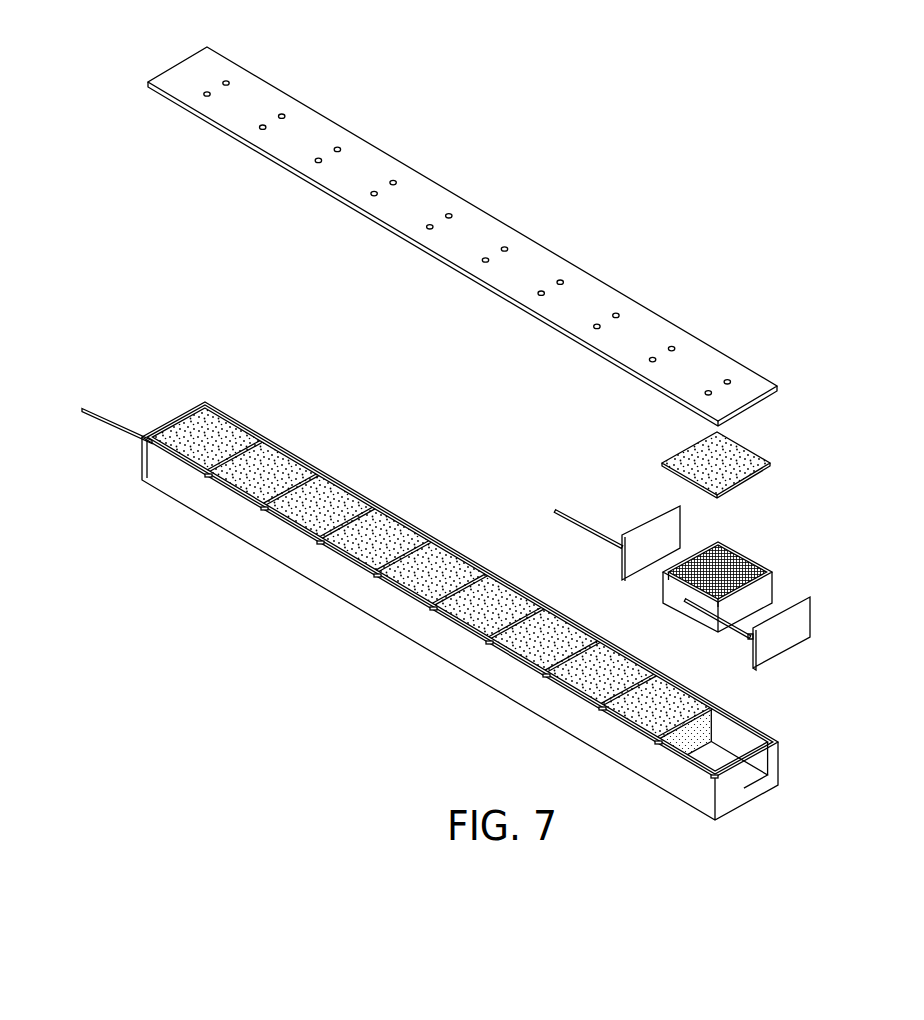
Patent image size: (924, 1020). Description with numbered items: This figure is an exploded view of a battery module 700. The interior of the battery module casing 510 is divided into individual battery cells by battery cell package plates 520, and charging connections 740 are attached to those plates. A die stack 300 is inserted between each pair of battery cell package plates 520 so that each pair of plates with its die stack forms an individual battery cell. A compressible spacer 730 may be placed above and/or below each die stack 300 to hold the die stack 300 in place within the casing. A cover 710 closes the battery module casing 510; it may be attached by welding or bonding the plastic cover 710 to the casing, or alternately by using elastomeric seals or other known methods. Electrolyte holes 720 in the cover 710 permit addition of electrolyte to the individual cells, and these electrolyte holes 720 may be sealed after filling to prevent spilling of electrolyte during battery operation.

The battery module 700 is at (640, 190).
The cover 710 is at (430, 180).
The electrolyte holes 720 is at (615, 312).
The compressible spacer 730 is at (762, 453).
The die stack 300 is at (757, 548).
The battery module casing 510 is at (365, 612).
The battery cell package plates 520 is at (797, 640).
The charging connections 740 is at (737, 637).